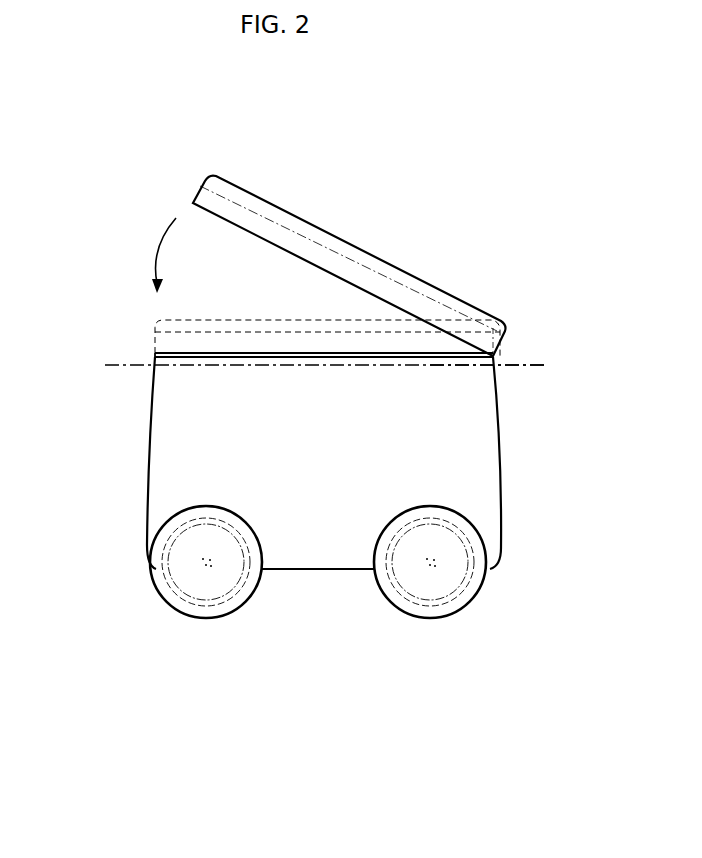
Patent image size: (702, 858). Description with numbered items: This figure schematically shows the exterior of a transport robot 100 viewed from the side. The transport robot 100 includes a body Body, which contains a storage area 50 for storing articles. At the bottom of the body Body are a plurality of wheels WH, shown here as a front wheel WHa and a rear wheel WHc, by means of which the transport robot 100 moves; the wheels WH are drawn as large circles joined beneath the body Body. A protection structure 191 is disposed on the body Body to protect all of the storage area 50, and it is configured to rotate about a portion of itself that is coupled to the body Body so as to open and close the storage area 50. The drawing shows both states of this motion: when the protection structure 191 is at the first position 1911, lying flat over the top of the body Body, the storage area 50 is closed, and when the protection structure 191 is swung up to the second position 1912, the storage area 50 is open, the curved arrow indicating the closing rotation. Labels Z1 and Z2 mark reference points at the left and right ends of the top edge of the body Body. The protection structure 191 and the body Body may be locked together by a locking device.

The transport robot 100 is at (518, 211).
The protection structure 191 is at (448, 150).
The first position 1911 is at (381, 340).
The second position 1912 is at (333, 256).
The storage area 50 is at (263, 353).
The body Body is at (145, 458).
The wheel WHa is at (200, 613).
The wheel WHc is at (452, 613).
The wheels WH is at (485, 685).
The first reference level Z1 is at (110, 363).
The second reference level Z2 is at (537, 363).